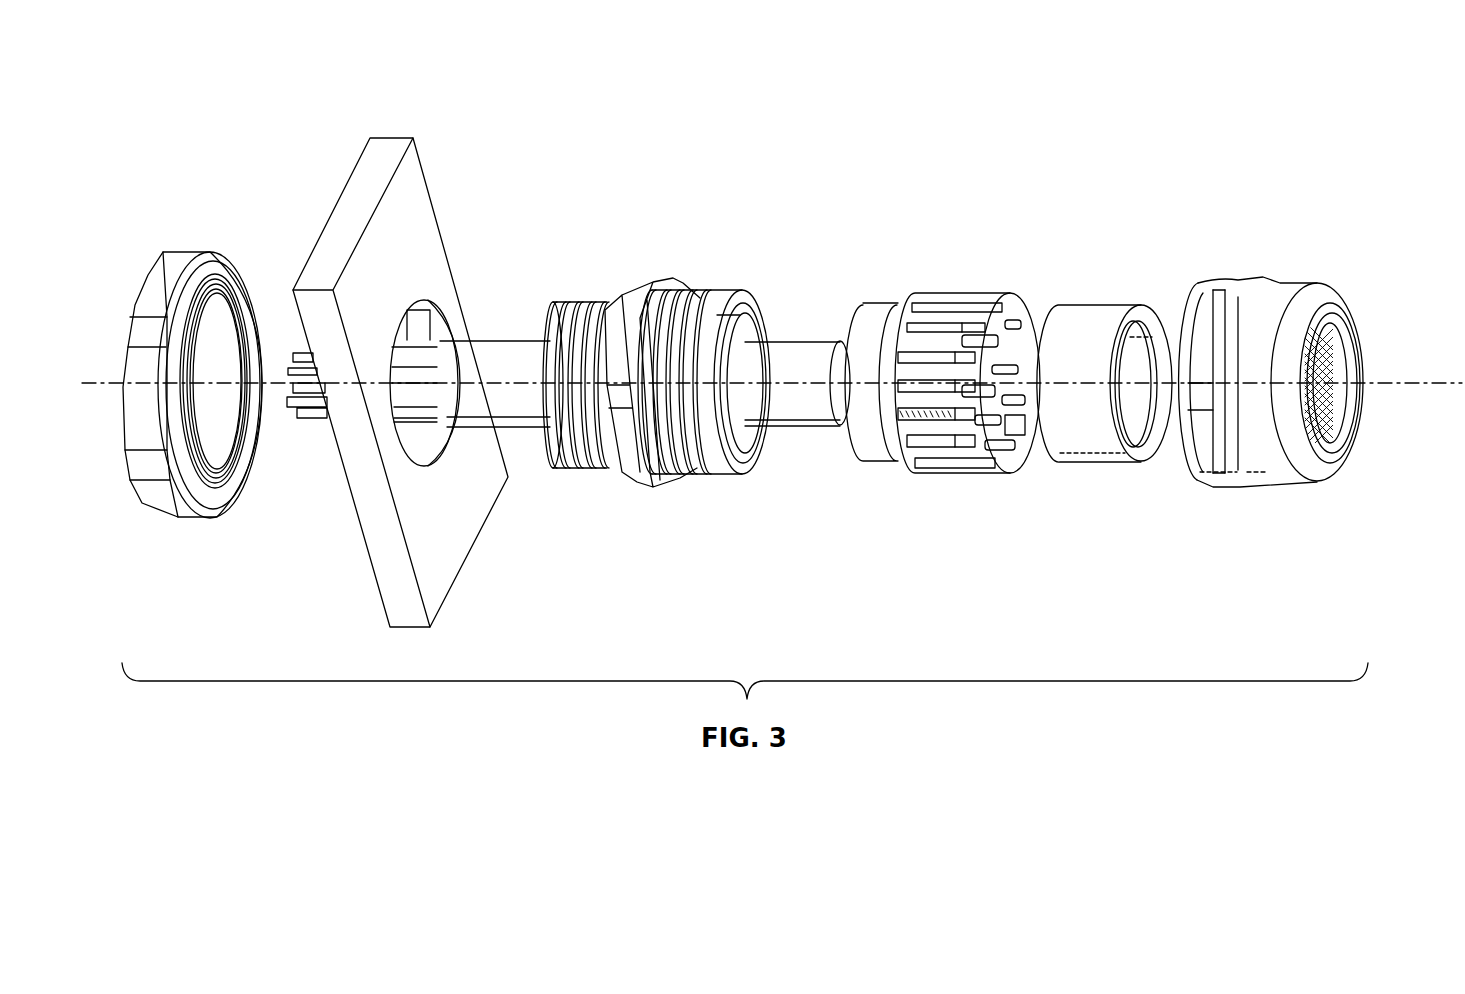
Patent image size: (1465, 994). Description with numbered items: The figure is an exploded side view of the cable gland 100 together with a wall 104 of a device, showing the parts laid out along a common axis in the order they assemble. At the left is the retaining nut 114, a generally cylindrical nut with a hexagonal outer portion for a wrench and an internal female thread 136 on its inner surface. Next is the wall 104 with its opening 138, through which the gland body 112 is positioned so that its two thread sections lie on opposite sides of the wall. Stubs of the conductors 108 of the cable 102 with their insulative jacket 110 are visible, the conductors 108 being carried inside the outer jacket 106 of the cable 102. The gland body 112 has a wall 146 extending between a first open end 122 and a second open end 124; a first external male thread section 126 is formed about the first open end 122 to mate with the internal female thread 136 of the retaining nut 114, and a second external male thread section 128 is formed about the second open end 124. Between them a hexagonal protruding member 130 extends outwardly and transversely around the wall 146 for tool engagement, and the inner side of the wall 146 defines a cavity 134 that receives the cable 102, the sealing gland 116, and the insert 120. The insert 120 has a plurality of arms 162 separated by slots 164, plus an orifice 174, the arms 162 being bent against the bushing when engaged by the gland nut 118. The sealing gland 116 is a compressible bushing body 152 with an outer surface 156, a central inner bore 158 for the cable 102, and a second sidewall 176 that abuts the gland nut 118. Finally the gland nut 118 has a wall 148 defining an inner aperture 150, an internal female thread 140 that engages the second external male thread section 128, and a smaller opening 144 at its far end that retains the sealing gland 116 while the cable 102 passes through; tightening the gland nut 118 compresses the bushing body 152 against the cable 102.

The cable gland 100 is at (888, 162).
The cable 102 is at (785, 350).
The wall 104 is at (414, 400).
The outer jacket 106 is at (500, 348).
The conductors 108 is at (993, 360).
The insulative jacket 110 is at (418, 355).
The gland body 112 is at (629, 388).
The retaining nut 114 is at (208, 407).
The sealing gland 116 is at (1117, 391).
The gland nut 118 is at (1317, 386).
The insert 120 is at (980, 380).
The first open end 122 is at (576, 381).
The second open end 124 is at (778, 416).
The first external male thread section 126 is at (597, 305).
The second external male thread section 128 is at (741, 384).
The protruding member 130 is at (638, 468).
The cavity 134 is at (437, 593).
The internal female thread 136 is at (247, 350).
The opening 138 is at (407, 433).
The internal female thread 140 is at (1330, 380).
The opening 144 is at (737, 450).
The wall 146 is at (600, 465).
The wall 148 is at (1273, 305).
The inner aperture 150 is at (1322, 365).
The bushing body 152 is at (1075, 425).
The outer surface 156 is at (1070, 307).
The inner bore 158 is at (1130, 422).
The arms 162 is at (935, 337).
The slot 164 is at (947, 328).
The orifice 174 is at (1010, 423).
The second sidewall 176 is at (1132, 423).